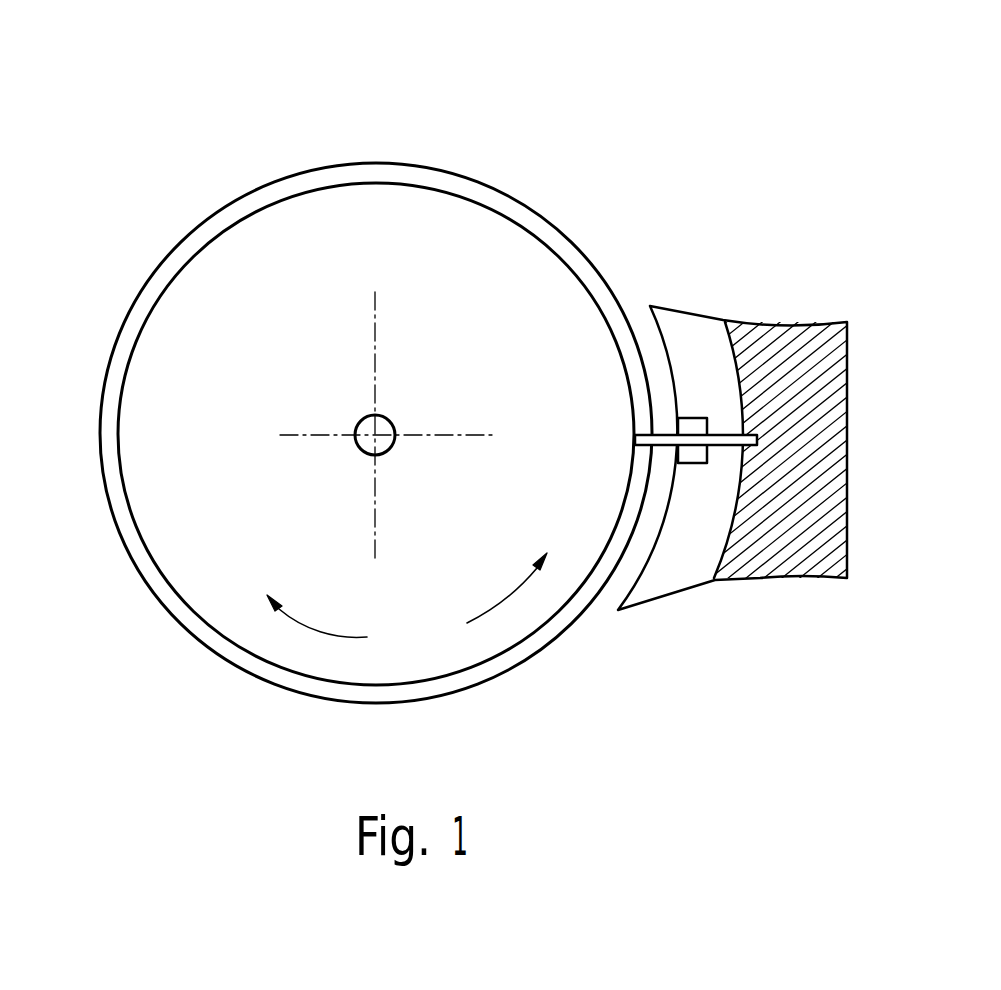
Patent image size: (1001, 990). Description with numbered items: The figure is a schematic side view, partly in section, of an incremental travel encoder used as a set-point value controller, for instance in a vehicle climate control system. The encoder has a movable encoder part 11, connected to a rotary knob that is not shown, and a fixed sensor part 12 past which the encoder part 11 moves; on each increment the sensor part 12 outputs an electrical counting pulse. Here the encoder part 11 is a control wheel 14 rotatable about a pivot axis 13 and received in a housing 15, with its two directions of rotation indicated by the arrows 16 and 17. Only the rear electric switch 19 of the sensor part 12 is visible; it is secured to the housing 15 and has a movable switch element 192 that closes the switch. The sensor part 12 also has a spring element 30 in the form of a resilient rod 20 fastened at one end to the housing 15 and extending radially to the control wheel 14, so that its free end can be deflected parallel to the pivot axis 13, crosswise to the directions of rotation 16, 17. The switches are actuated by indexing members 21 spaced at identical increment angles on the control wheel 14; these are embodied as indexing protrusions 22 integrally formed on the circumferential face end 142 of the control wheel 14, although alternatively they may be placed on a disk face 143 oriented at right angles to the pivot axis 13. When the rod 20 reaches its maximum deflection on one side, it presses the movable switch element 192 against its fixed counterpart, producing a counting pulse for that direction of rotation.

The encoder part 11 is at (368, 396).
The sensor part 12 is at (739, 458).
The pivot axis 13 is at (377, 435).
The control wheel 14 is at (472, 220).
The circumferential face end 142 is at (148, 313).
The disk face 143 is at (228, 263).
The housing 15 is at (738, 562).
The direction of rotation 16 is at (322, 630).
The direction of rotation 17 is at (503, 608).
The electric switch 19 is at (697, 429).
The movable switch element 192 is at (693, 458).
The resilient rod 20 is at (645, 435).
The indexing members 21 is at (402, 162).
The indexing protrusions 22 is at (325, 145).
The spring element 30 is at (633, 462).